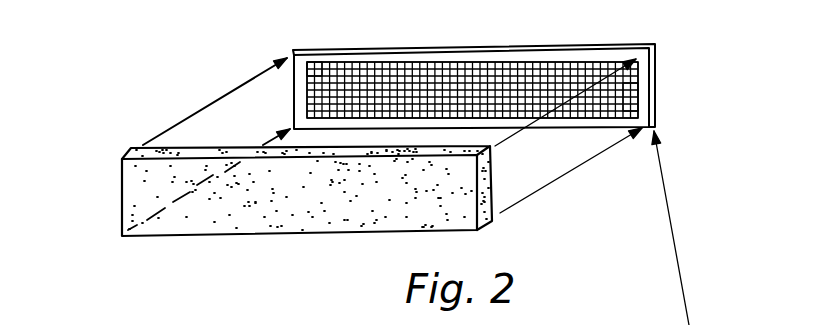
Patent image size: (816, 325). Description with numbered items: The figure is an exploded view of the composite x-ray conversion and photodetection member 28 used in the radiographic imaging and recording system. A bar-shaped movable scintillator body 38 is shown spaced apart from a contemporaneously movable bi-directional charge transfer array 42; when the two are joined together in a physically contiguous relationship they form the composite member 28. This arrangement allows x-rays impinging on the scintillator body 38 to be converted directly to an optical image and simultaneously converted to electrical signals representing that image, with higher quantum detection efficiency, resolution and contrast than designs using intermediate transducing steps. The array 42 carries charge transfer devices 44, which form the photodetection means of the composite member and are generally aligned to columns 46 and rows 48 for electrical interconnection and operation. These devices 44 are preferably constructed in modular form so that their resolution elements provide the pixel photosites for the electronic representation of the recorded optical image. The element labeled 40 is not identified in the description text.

The composite x-ray conversion and photodetection member 28 is at (578, 166).
The bar-shaped movable scintillator body 38 is at (122, 205).
The filter block interior 40 is at (222, 217).
The bi-directional charge transfer array 42 is at (657, 62).
The charge transfer devices 44 is at (310, 90).
The columns 46 is at (335, 65).
The rows 48 is at (635, 107).